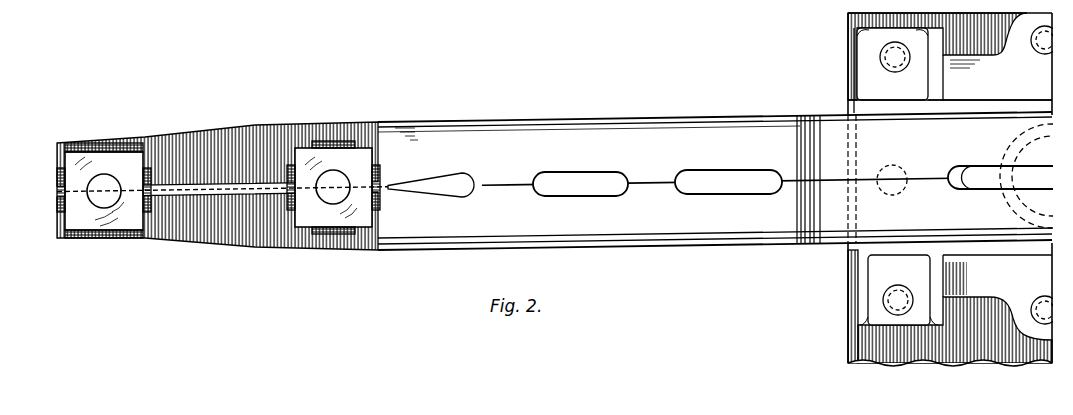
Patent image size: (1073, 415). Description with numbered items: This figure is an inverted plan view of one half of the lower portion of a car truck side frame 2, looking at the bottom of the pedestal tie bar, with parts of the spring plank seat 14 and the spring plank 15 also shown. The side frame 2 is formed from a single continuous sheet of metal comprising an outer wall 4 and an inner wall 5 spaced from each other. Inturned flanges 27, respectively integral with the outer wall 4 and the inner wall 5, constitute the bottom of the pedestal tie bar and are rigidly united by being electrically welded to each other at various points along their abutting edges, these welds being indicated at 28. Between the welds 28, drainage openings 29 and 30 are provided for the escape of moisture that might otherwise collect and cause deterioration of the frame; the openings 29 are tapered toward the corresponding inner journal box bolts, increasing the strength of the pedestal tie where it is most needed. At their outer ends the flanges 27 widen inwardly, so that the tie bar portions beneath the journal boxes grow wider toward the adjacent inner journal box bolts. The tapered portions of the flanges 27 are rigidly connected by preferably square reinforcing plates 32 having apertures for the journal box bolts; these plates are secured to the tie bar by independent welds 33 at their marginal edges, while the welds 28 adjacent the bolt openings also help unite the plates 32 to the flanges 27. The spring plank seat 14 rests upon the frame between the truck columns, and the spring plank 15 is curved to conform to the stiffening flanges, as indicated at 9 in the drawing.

The side frame 2 is at (738, 123).
The outer wall 4 is at (518, 125).
The inner wall 5 is at (503, 250).
The inner rail flanges 9 is at (450, 127).
The spring plank seat 14 is at (953, 64).
The spring plank 15 is at (870, 349).
The inturned flanges 27 is at (238, 140).
The welds 28 is at (100, 170).
The drainage openings 29 is at (460, 178).
The drainage openings 30 is at (623, 172).
The reinforcing plates 32 is at (72, 160).
The independent welds 33 is at (146, 172).